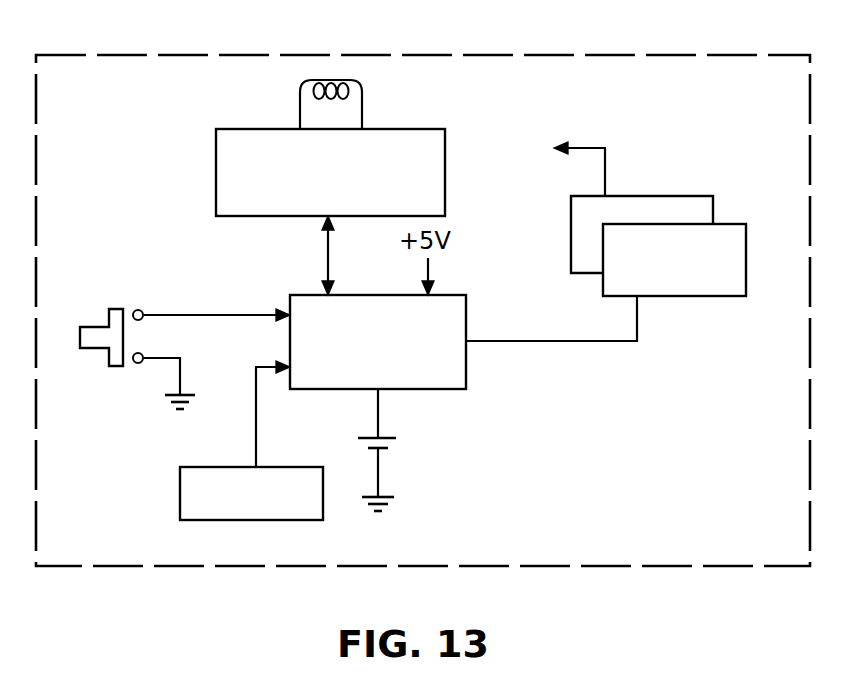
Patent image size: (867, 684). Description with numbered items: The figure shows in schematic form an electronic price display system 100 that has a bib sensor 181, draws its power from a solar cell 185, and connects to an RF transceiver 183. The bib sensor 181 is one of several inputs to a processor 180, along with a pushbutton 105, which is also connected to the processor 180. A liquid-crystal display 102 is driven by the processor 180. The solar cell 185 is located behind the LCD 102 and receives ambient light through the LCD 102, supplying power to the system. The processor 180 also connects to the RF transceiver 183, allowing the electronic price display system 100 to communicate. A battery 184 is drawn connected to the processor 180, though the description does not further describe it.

The electronic price display system 100 is at (142, 38).
The RF transceiver 183 is at (216, 170).
The processor 180 is at (466, 365).
The solar cell 185 is at (668, 196).
The liquid-crystal display 102 is at (683, 296).
The battery 184 is at (387, 444).
The pushbutton 105 is at (100, 325).
The bib sensor 181 is at (180, 490).